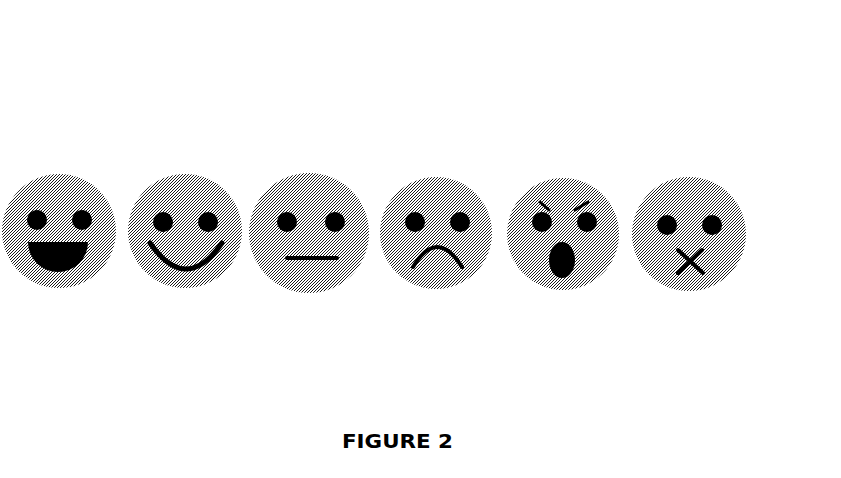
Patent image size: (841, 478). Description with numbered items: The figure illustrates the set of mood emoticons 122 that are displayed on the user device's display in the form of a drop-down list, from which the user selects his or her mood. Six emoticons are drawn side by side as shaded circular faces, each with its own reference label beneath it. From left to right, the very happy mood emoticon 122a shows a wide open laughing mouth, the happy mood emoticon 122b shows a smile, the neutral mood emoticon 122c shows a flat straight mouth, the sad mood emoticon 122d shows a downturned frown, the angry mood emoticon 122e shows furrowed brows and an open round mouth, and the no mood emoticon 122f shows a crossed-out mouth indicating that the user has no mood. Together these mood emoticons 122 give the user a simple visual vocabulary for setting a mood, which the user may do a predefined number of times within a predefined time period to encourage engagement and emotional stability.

The mood emoticons 122 is at (663, 99).
The very happy mood emoticon 122a is at (65, 290).
The happy mood emoticon 122b is at (188, 290).
The neutral mood emoticon 122c is at (309, 292).
The sad mood emoticon 122d is at (433, 289).
The angry mood emoticon 122e is at (561, 290).
The no mood emoticon 122f is at (688, 291).